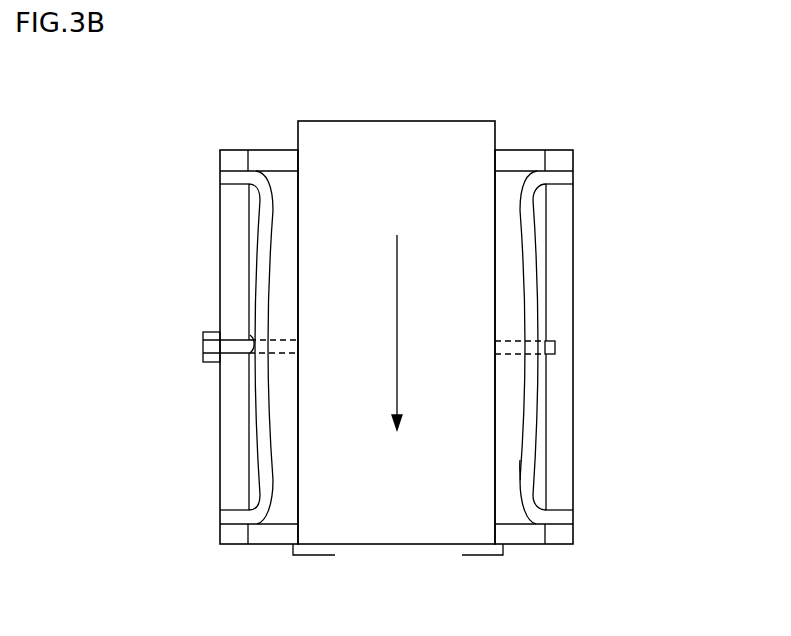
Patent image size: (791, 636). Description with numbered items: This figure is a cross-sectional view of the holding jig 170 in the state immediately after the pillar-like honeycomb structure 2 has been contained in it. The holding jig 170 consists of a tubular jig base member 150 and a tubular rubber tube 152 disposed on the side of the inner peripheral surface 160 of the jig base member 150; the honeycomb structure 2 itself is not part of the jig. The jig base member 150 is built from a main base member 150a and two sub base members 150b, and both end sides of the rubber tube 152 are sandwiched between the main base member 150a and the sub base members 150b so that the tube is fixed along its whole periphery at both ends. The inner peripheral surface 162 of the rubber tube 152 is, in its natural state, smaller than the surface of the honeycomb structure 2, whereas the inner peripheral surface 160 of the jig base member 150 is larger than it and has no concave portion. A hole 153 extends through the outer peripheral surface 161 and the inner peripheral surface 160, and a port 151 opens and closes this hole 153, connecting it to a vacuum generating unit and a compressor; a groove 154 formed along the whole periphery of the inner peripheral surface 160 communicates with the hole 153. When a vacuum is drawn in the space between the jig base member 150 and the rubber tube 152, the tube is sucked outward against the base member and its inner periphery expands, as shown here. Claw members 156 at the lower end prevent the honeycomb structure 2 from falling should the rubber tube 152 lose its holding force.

The honeycomb structure 2 is at (418, 130).
The tubular jig base member 150 is at (628, 347).
The main base member 150a is at (567, 347).
The sub base members 150b is at (568, 162).
The port 151 is at (208, 331).
The rubber tube 152 is at (525, 185).
The hole 153 is at (230, 350).
The groove 154 is at (250, 335).
The claw members 156 is at (478, 557).
The inner peripheral surface of the jig base member 160 is at (255, 224).
The outer peripheral surface of the jig base member 161 is at (220, 468).
The inner peripheral surface of the rubber tube 162 is at (510, 465).
The holding jig 170 is at (450, 321).